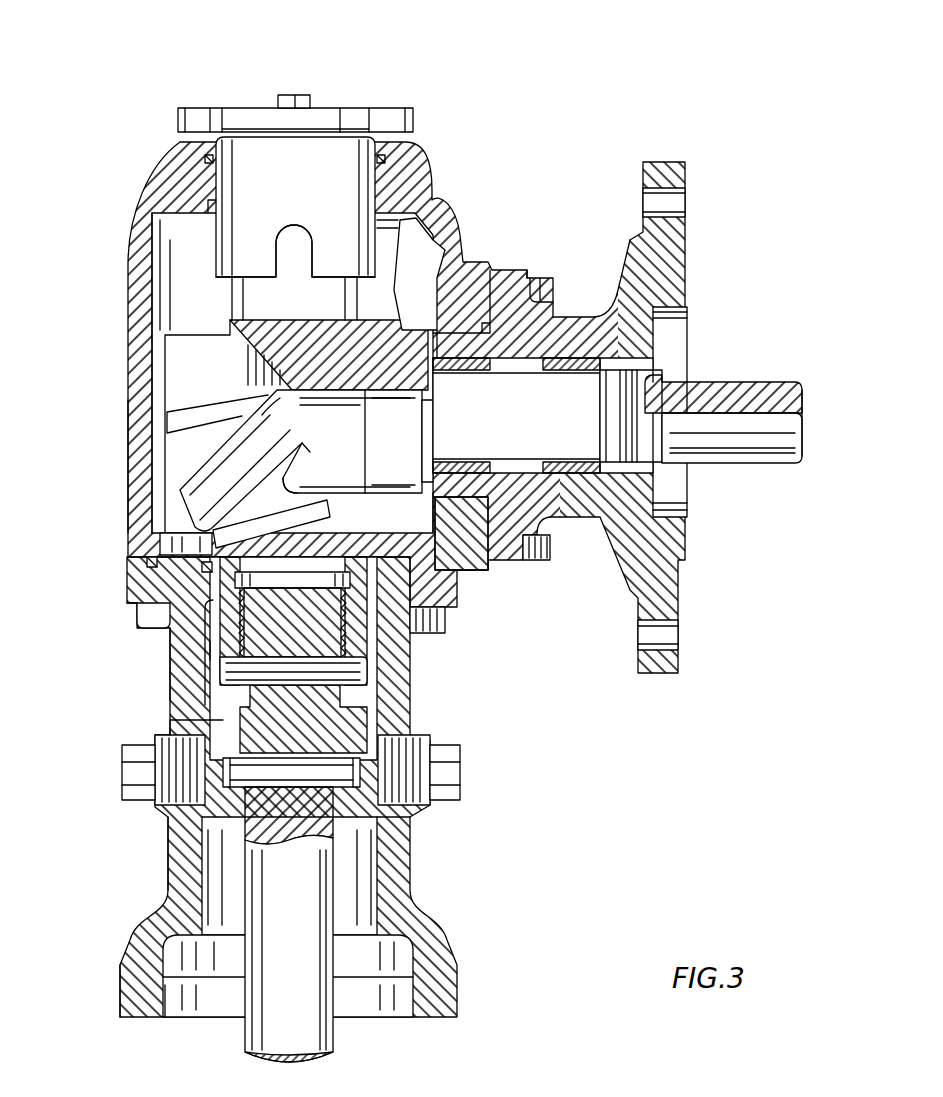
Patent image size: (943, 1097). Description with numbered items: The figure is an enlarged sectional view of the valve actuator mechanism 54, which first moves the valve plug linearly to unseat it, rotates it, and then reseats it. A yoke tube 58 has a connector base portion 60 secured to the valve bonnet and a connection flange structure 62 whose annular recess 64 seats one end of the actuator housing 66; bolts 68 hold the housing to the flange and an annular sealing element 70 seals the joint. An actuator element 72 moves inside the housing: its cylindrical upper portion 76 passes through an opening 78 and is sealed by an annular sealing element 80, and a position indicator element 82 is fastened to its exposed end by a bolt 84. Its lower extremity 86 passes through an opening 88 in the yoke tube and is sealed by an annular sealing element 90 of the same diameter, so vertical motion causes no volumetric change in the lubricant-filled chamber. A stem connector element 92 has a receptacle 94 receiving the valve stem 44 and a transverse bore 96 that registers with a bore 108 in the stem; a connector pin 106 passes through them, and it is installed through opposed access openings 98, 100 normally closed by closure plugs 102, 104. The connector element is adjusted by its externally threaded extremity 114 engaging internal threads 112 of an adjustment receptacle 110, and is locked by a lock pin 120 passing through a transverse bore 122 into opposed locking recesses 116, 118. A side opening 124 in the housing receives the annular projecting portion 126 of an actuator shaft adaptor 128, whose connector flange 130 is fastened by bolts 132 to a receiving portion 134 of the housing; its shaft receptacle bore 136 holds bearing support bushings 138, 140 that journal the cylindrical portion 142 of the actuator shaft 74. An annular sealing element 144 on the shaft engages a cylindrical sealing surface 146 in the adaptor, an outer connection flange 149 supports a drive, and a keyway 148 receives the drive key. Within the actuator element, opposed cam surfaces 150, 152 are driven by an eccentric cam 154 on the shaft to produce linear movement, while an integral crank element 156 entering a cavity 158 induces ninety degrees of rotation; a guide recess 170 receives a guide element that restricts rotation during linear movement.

The valve stem 44 is at (300, 1040).
The valve actuator mechanism 54 is at (106, 488).
The yoke tube 58 is at (415, 915).
The connector base portion 60 is at (133, 985).
The connection flange structure 62 is at (150, 568).
The annular recess 64 is at (195, 552).
The actuator housing 66 is at (140, 373).
The bolts 68 is at (440, 624).
The annular sealing element 70 is at (470, 577).
The actuator element 72 is at (357, 320).
The actuator shaft 74 is at (800, 445).
The cylindrical upper portion 76 is at (222, 240).
The opening 78 is at (212, 182).
The annular sealing element 80 is at (213, 152).
The position indicator element 82 is at (384, 118).
The bolt 84 is at (300, 95).
The lower extremity 86 is at (212, 630).
The opening 88 is at (175, 612).
The annular sealing element 90 is at (140, 601).
The stem connector element 92 is at (320, 728).
The receptacle 94 is at (210, 692).
The transverse bore 96 is at (375, 820).
The access opening 98 is at (130, 750).
The access opening 100 is at (440, 753).
The closure plug 102 is at (128, 786).
The closure plug 104 is at (445, 800).
The connector pin 106 is at (220, 820).
The bore 108 is at (355, 742).
The adjustment receptacle 110 is at (305, 578).
The internal threads 112 is at (242, 607).
The externally threaded extremity 114 is at (218, 655).
The locking recess 116 is at (228, 648).
The locking recess 118 is at (380, 666).
The lock pin 120 is at (300, 676).
The transverse bore 122 is at (272, 658).
The side opening 124 is at (473, 335).
The annular projecting portion 126 is at (455, 492).
The actuator shaft adaptor 128 is at (573, 337).
The connector flange 130 is at (505, 285).
The bolts 132 is at (540, 275).
The receiving portion 134 is at (440, 200).
The shaft receptacle bore 136 is at (527, 552).
The bearing support bushing 138 is at (513, 320).
The bearing support bushing 140 is at (600, 345).
The cylindrical portion 142 is at (550, 422).
The annular sealing element 144 is at (627, 367).
The cylindrical sealing surface 146 is at (655, 447).
The keyway 148 is at (752, 390).
The outer connection flange 149 is at (663, 612).
The cam surface 150 is at (390, 388).
The cam surface 152 is at (380, 498).
The eccentric cam 154 is at (385, 462).
The crank element 156 is at (237, 436).
The cavity 158 is at (292, 521).
The guide recess 170 is at (290, 255).